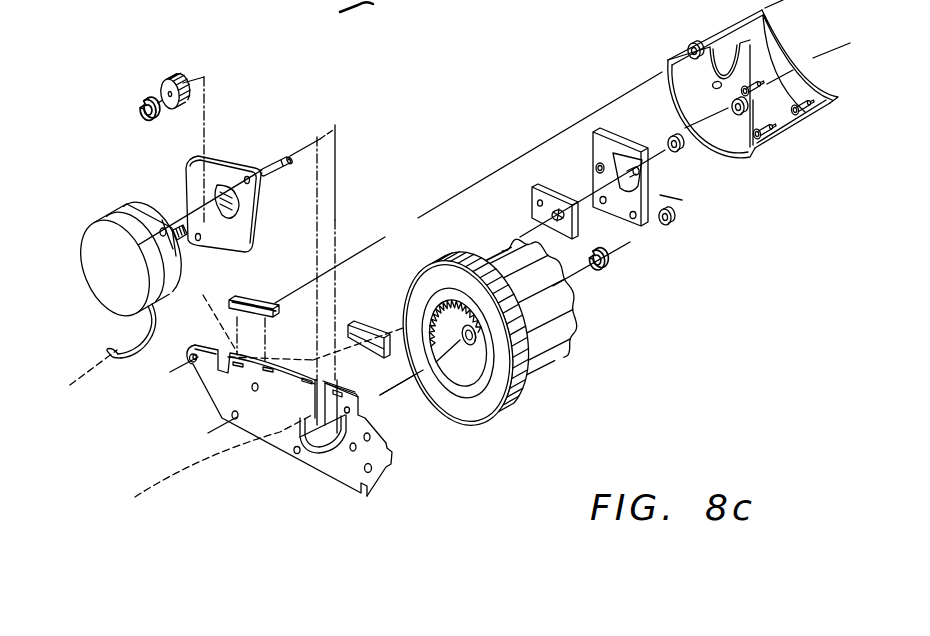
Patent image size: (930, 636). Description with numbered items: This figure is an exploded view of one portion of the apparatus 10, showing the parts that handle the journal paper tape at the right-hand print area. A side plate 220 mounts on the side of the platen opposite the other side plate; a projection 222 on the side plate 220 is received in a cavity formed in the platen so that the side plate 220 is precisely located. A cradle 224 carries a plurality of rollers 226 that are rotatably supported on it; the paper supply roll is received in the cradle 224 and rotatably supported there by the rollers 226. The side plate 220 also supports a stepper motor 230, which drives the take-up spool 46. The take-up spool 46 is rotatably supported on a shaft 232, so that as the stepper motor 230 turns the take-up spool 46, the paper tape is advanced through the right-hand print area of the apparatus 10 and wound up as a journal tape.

The apparatus 10 is at (139, 86).
The take-up spool 46 is at (574, 346).
The side plate 220 is at (330, 458).
The projection 222 is at (394, 465).
The cradle 224 is at (665, 76).
The rollers 226 is at (808, 116).
The stepper motor 230 is at (100, 243).
The shaft 232 is at (267, 165).